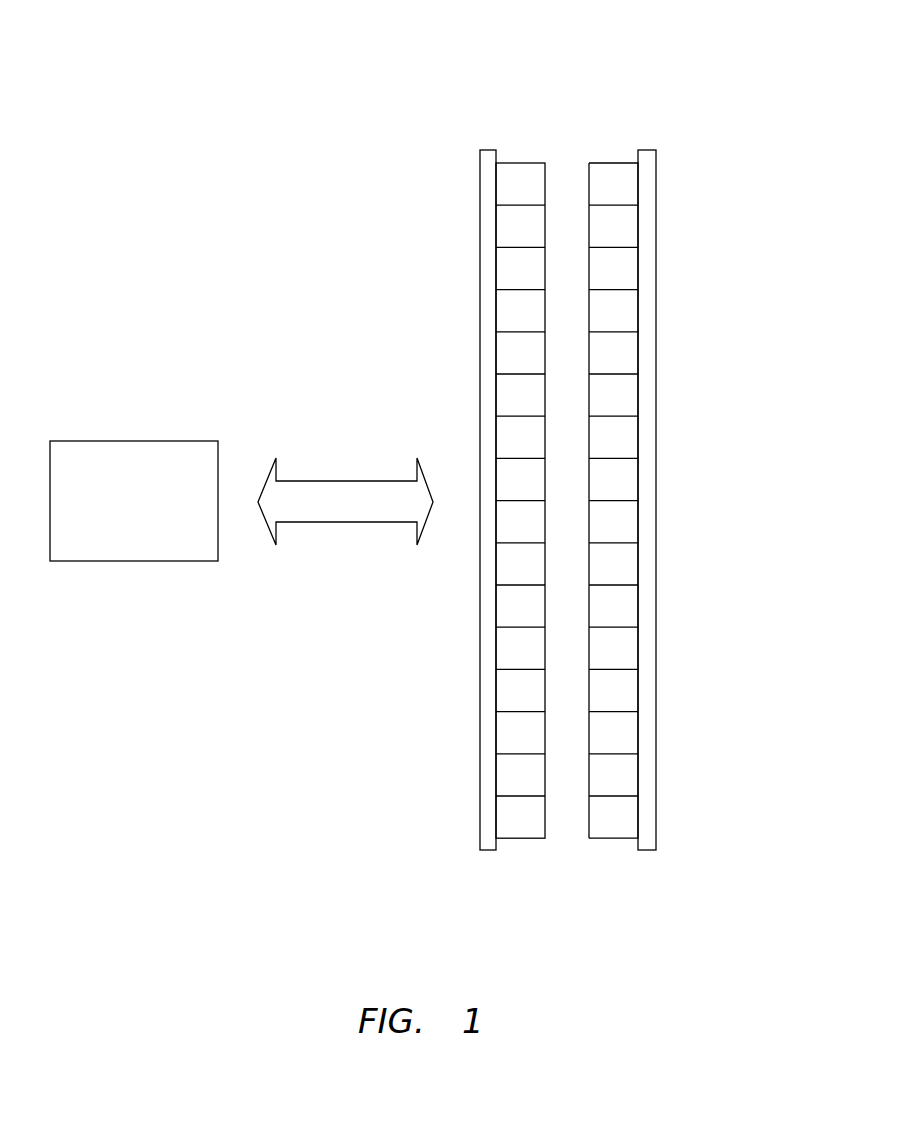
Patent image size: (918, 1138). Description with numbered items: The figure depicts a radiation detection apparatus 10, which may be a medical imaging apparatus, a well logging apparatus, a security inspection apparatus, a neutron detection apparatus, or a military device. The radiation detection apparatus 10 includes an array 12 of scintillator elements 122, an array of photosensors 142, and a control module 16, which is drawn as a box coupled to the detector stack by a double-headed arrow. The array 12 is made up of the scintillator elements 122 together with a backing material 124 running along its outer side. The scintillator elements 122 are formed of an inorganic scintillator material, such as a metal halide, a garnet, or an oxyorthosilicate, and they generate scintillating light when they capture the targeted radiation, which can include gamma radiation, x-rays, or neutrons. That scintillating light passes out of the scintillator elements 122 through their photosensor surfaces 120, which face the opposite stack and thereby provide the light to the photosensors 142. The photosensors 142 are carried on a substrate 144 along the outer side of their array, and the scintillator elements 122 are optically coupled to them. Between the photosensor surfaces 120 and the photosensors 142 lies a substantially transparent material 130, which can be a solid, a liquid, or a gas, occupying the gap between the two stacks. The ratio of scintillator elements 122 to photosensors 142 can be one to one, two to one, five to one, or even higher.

The radiation detection apparatus 10 is at (739, 46).
The array of scintillator elements 12 is at (744, 568).
The control module 16 is at (122, 512).
The photosensor surfaces 120 is at (588, 400).
The scintillator elements 122 is at (623, 311).
The backing material 124 is at (646, 633).
The substantially transparent material 130 is at (567, 500).
The photosensors 142 is at (510, 311).
The substrate 144 is at (488, 715).